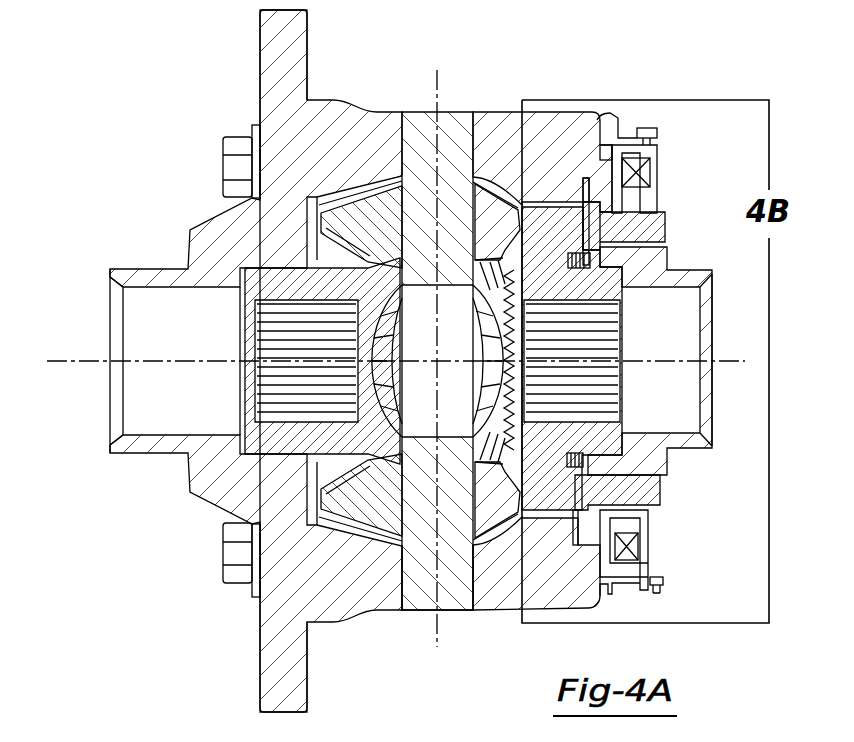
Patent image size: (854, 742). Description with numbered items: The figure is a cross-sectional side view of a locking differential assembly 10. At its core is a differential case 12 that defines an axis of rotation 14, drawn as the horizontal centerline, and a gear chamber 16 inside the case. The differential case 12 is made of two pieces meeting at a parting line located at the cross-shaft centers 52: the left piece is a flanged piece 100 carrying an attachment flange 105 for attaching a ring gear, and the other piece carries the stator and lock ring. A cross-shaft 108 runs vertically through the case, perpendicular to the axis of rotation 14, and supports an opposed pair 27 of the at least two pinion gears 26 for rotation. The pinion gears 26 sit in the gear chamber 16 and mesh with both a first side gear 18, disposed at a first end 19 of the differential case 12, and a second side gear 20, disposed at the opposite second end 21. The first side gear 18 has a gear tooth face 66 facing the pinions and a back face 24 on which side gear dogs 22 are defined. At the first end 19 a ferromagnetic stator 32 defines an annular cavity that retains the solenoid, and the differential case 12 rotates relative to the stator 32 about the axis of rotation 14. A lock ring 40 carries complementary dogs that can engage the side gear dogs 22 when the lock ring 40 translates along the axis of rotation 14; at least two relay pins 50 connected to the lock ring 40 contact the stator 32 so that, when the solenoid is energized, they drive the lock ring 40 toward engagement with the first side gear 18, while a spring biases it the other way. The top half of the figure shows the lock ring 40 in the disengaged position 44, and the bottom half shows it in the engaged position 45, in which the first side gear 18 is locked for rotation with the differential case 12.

The locking differential assembly 10 is at (456, 80).
The differential case 12 is at (546, 112).
The axis of rotation 14 is at (746, 358).
The gear chamber 16 is at (522, 206).
The first side gear 18 is at (610, 292).
The first end 19 is at (713, 445).
The second side gear 20 is at (312, 259).
The second end 21 is at (110, 277).
The side gear dogs 22 is at (600, 227).
The back face 24 is at (581, 197).
The pinion gears 26 is at (365, 207).
The opposed pair 27 is at (367, 515).
The stator 32 is at (658, 158).
The lock ring 40 is at (622, 477).
The disengaged position 44 is at (589, 189).
The engaged position 45 is at (585, 530).
The relay pins 50 is at (663, 488).
The cross-shaft centers 52 is at (438, 647).
The gear tooth face 66 is at (476, 190).
The flanged piece 100 is at (336, 100).
The attachment flange 105 is at (308, 26).
The cross-shaft 108 is at (417, 592).